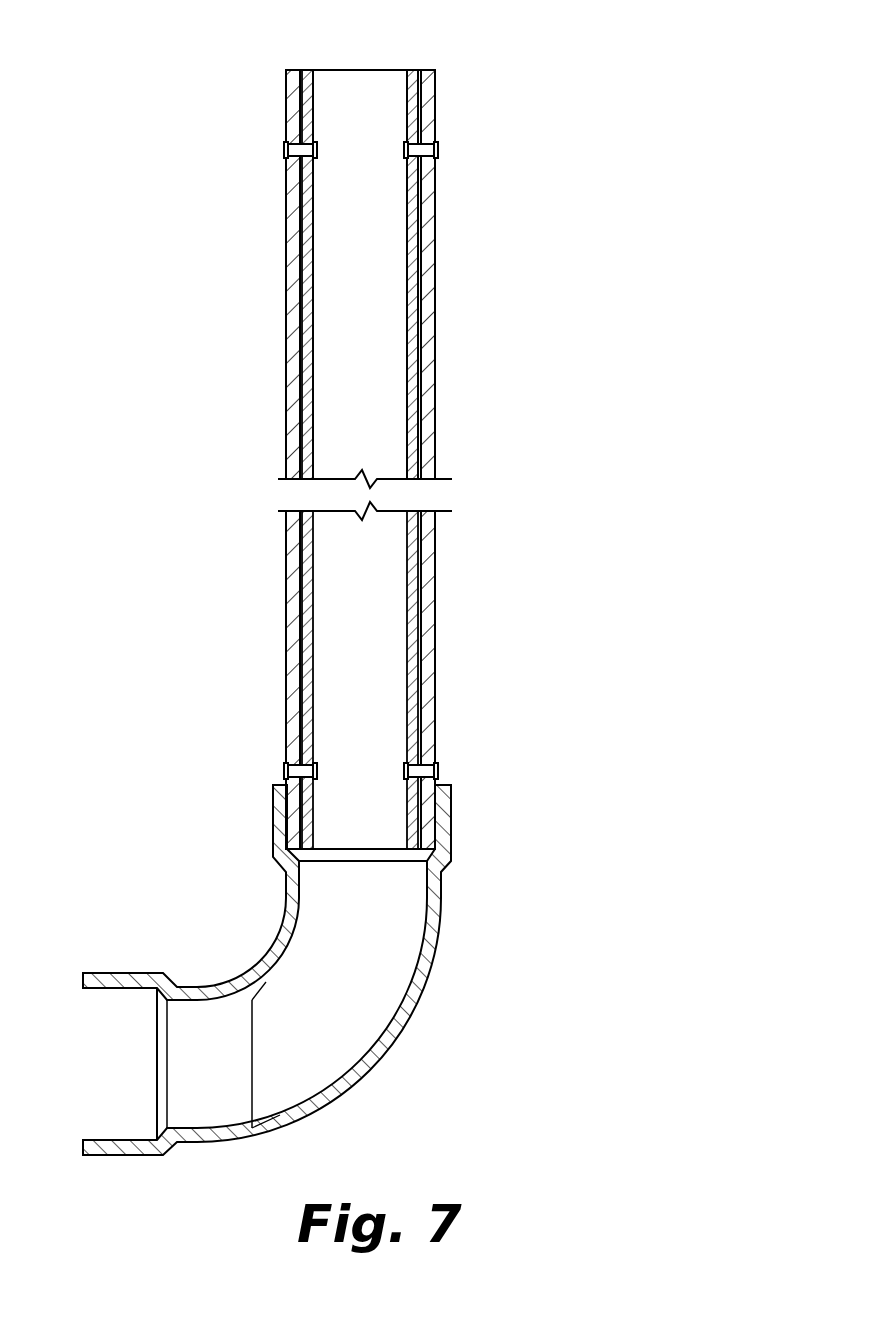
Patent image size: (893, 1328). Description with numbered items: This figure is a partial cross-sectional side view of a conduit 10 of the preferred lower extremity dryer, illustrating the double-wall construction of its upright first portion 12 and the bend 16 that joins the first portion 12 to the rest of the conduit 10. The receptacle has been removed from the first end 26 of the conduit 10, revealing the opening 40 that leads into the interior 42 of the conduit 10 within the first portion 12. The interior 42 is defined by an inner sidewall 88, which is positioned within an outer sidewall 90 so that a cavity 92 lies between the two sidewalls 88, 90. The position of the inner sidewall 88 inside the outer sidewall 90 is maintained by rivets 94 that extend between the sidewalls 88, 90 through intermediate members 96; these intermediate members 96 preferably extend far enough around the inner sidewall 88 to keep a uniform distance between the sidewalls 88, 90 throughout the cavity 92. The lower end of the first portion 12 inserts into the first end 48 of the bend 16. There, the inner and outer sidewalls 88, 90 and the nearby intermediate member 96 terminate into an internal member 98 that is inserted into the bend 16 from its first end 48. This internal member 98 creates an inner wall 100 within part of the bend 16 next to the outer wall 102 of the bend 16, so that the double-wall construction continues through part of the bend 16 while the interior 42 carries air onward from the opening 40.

The conduit 10 is at (113, 437).
The first portion 12 is at (437, 318).
The bend 16 is at (393, 1048).
The first end 26 is at (445, 67).
The opening 40 is at (383, 68).
The interior 42 is at (341, 81).
The first end of the bend 48 is at (459, 811).
The inner sidewall 88 is at (408, 240).
The outer sidewall 90 is at (433, 278).
The cavity 92 is at (416, 336).
The rivets 94 is at (422, 151).
The intermediate members 96 is at (411, 116).
The internal member 98 is at (338, 994).
The inner wall 100 is at (300, 927).
The outer wall of the bend 102 is at (426, 963).